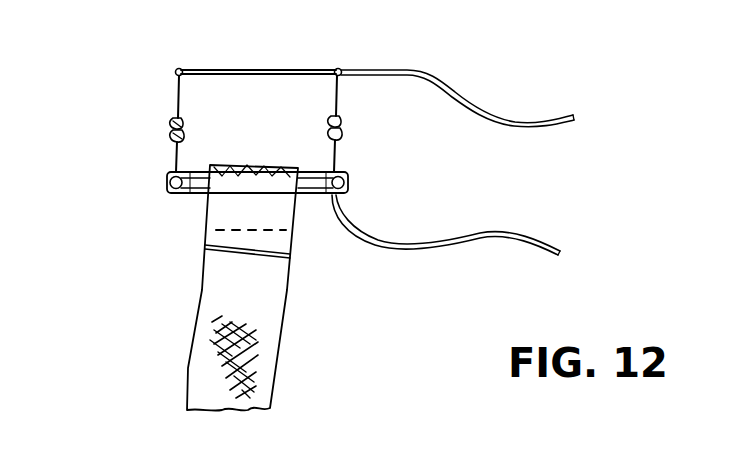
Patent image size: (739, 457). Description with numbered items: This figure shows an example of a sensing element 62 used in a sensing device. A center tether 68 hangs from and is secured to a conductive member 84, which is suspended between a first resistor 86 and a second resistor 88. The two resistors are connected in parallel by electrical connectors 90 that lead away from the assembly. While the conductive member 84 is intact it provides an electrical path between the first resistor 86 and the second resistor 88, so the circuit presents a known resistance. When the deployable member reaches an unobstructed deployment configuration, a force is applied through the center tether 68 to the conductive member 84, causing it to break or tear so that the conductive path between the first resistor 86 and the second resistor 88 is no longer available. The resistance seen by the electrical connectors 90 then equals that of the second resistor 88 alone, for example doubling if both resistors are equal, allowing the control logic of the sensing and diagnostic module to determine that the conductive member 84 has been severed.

The sensing element 62 is at (176, 66).
The center tether 68 is at (253, 305).
The conductive member 84 is at (196, 185).
The first resistor 86 is at (168, 123).
The second resistor 88 is at (341, 122).
The electrical connectors 90 is at (477, 98).